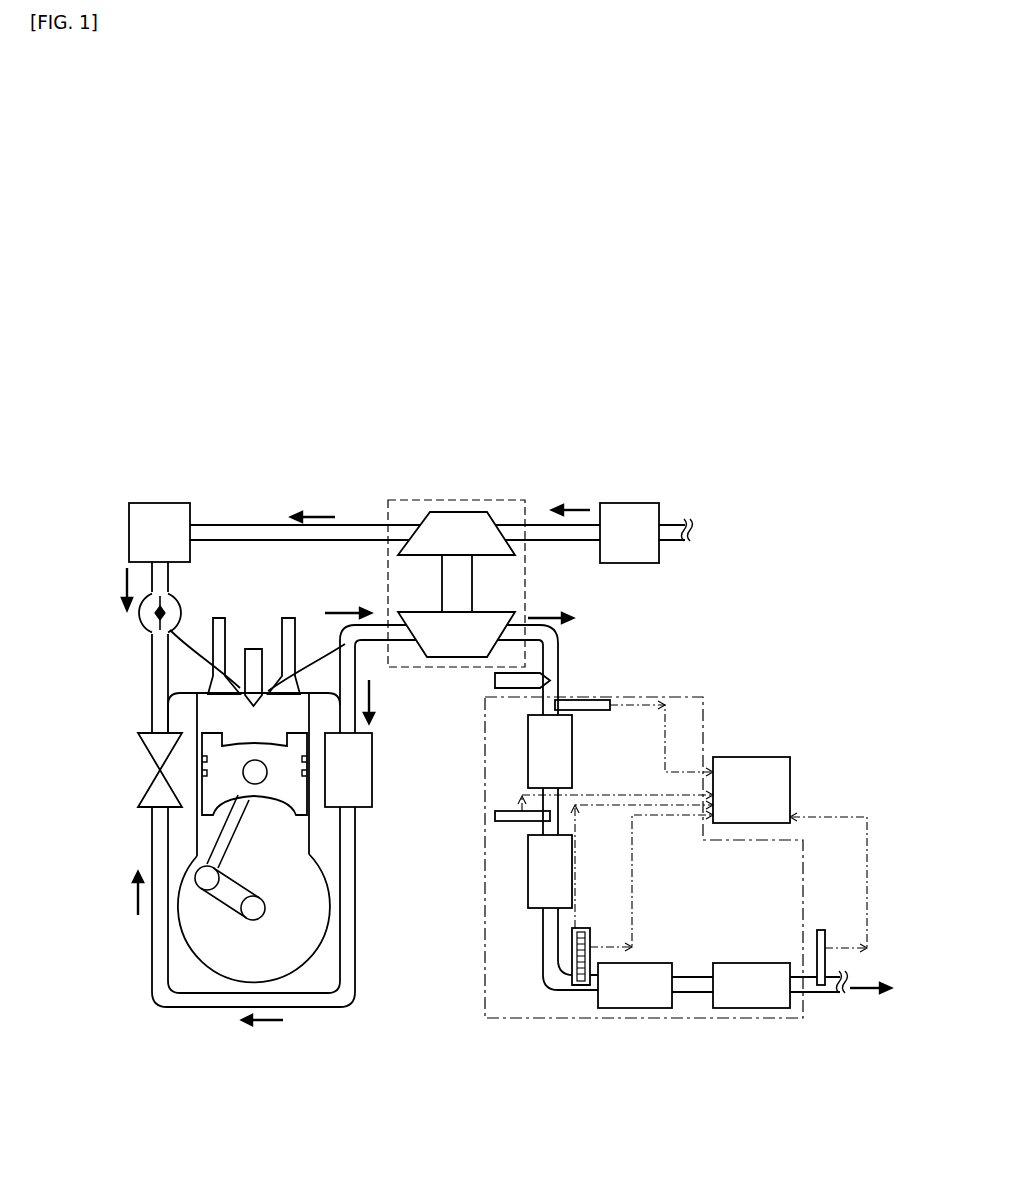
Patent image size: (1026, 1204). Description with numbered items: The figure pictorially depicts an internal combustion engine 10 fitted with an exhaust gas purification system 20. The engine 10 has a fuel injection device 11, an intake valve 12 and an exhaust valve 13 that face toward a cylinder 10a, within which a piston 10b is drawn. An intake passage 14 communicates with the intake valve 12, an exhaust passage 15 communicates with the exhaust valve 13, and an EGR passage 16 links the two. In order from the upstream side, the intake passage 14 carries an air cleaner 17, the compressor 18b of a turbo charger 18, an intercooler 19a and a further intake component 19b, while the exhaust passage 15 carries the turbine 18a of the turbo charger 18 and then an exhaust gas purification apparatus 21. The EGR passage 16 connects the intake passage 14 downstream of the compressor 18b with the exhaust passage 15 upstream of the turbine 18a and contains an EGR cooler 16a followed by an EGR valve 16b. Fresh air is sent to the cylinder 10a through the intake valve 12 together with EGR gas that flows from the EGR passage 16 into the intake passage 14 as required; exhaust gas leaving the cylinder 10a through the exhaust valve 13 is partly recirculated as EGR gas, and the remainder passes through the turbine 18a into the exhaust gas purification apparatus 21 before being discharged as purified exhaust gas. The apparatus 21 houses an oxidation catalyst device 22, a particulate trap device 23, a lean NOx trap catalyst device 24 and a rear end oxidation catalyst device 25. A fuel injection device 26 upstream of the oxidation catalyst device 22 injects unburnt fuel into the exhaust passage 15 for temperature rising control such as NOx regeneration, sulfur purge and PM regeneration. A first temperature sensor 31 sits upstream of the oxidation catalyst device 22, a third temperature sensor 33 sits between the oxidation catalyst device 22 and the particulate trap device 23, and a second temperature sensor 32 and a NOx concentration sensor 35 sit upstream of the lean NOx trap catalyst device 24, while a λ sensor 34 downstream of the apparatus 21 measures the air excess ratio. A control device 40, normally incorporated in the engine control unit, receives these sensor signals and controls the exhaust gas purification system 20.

The internal combustion engine 10 is at (650, 435).
The cylinder 10a is at (215, 718).
The piston 10b is at (293, 793).
The fuel injection device 11 is at (251, 648).
The intake valve 12 is at (219, 618).
The exhaust valve 13 is at (288, 618).
The intake passage 14 is at (247, 525).
The exhaust passage 15 is at (572, 660).
The EGR passage 16 is at (357, 945).
The EGR cooler 16a is at (372, 787).
The EGR valve 16b is at (158, 770).
The air cleaner 17 is at (633, 565).
The turbo charger 18 is at (506, 489).
The turbine 18a is at (472, 612).
The compressor 18b is at (442, 557).
The intercooler 19a is at (129, 537).
The intake air pump 19b is at (138, 614).
The exhaust gas purification system 20 is at (740, 668).
The exhaust gas purification apparatus 21 is at (690, 697).
The oxidation catalyst device 22 is at (573, 740).
The particulate trap device 23 is at (530, 870).
The lean NOx trap catalyst device 24 is at (648, 963).
The rear end oxidation catalyst device 25 is at (733, 963).
The fuel injection device 26 is at (493, 684).
The first temperature sensor 31 is at (612, 702).
The second temperature sensor 32 is at (585, 928).
The third temperature sensor 33 is at (495, 815).
The λ sensor 34 is at (820, 930).
The NOx concentration sensor 35 is at (578, 990).
The control device 40 is at (747, 757).